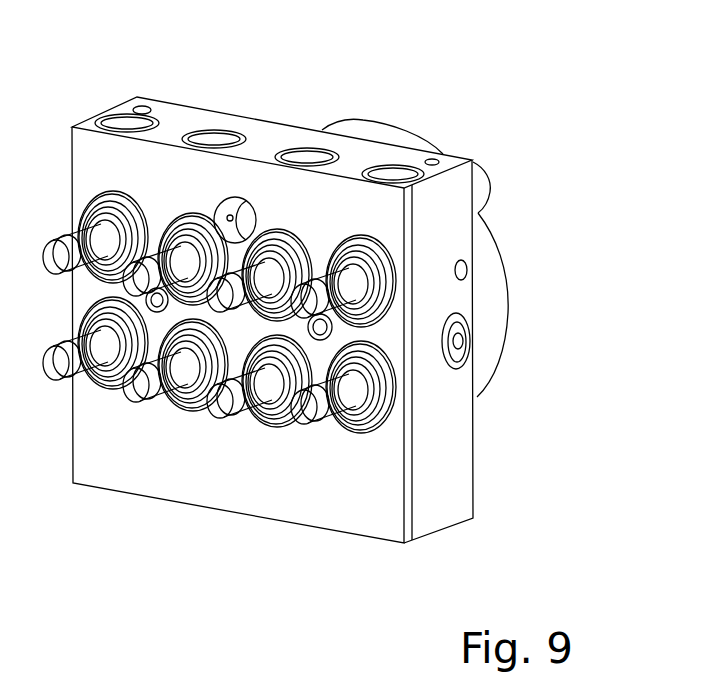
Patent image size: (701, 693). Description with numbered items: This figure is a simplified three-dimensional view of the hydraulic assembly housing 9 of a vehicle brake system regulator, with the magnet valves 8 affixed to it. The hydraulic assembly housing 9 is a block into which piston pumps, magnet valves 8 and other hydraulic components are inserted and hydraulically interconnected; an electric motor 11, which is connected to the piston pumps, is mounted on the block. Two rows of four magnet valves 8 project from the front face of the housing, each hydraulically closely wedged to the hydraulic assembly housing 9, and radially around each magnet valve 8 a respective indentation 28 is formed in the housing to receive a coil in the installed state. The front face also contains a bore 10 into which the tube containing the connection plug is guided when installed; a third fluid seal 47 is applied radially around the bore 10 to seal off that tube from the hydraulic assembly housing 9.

The hydraulic assembly housing 9 is at (480, 453).
The electric motor 11 is at (486, 292).
The bore 10 is at (227, 215).
The third fluid seal 47 is at (251, 204).
The magnet valve 8 is at (330, 480).
The indentation 28 is at (362, 422).